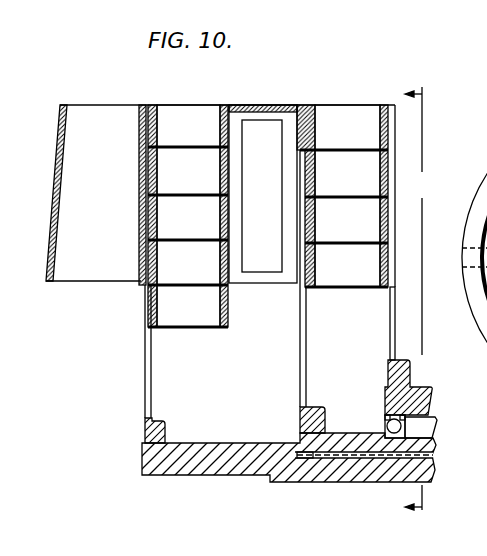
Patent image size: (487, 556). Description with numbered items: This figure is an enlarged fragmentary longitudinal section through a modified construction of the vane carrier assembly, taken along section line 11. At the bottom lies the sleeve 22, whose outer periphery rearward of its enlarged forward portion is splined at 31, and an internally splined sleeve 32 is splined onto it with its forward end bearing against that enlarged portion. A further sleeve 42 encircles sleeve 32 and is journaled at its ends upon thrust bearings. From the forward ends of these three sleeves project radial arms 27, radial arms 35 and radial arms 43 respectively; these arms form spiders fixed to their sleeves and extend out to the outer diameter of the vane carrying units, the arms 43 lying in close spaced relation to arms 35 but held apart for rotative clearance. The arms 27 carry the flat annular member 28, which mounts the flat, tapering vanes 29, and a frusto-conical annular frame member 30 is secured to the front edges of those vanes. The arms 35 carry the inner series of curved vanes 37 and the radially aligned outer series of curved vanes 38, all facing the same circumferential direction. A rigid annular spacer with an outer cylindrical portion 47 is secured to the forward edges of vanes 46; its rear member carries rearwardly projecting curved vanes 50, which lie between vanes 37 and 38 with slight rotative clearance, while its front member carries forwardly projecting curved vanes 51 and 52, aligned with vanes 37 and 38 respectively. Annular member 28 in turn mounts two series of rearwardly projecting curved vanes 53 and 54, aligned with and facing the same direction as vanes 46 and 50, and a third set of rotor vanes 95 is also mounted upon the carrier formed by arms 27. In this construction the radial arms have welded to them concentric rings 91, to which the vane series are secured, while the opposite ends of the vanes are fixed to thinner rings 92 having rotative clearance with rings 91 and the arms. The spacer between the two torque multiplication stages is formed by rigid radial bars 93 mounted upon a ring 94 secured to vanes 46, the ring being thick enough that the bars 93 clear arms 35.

The section line 11 is at (431, 306).
The sleeve 22 is at (207, 455).
The radial arms 27 is at (146, 378).
The flat annular member 28 is at (129, 182).
The vanes 29 is at (81, 272).
The frusto-conical annular frame member 30 is at (56, 182).
The splines 31 is at (432, 455).
The internally splined sleeve 32 is at (340, 437).
The radial arms 35 is at (303, 358).
The curved vanes 37 is at (364, 276).
The curved vanes 38 is at (364, 185).
The sleeve 42 is at (426, 395).
The radial arms 43 is at (392, 333).
The vanes 46 is at (364, 139).
The outer cylindrical portion 47 is at (272, 105).
The curved vanes 50 is at (364, 230).
The curved vanes 51 is at (202, 274).
The curved vanes 52 is at (202, 183).
The curved vanes 53 is at (202, 140).
The curved vanes 54 is at (202, 229).
The concentric rings 91 is at (153, 106).
The rings 92 is at (240, 105).
The radial bars 93 is at (262, 283).
The ring 94 is at (307, 105).
The third set of rotor vanes 95 is at (202, 318).